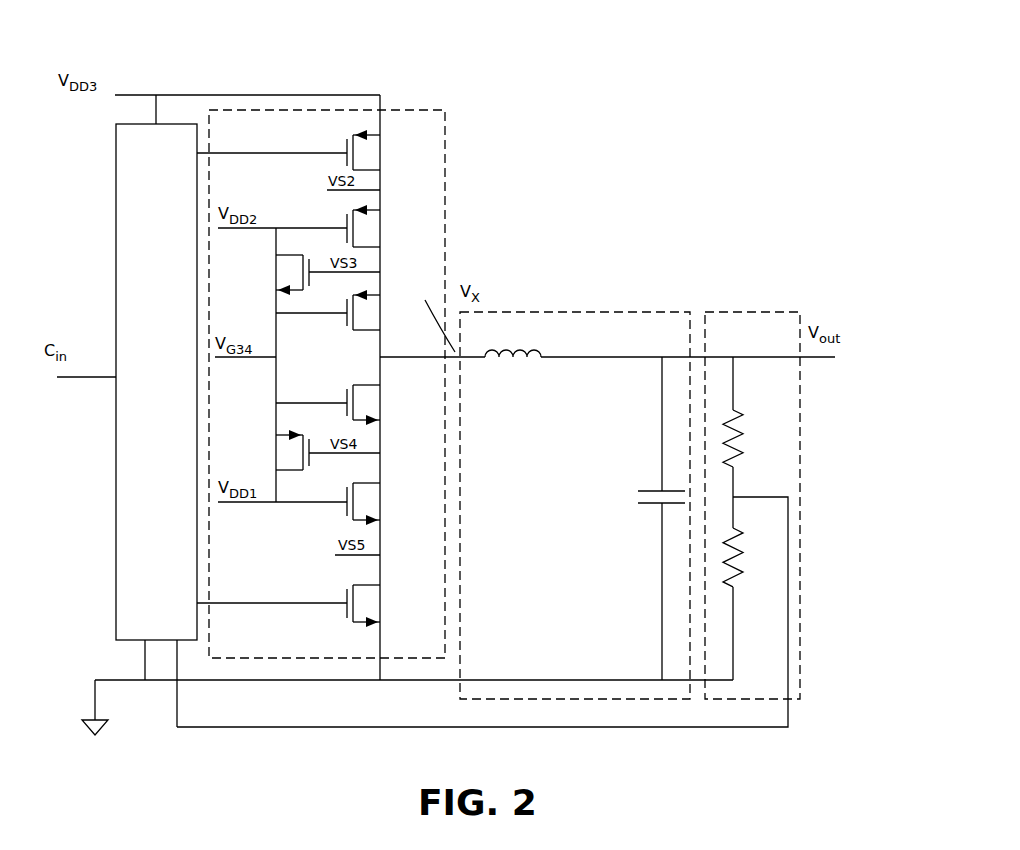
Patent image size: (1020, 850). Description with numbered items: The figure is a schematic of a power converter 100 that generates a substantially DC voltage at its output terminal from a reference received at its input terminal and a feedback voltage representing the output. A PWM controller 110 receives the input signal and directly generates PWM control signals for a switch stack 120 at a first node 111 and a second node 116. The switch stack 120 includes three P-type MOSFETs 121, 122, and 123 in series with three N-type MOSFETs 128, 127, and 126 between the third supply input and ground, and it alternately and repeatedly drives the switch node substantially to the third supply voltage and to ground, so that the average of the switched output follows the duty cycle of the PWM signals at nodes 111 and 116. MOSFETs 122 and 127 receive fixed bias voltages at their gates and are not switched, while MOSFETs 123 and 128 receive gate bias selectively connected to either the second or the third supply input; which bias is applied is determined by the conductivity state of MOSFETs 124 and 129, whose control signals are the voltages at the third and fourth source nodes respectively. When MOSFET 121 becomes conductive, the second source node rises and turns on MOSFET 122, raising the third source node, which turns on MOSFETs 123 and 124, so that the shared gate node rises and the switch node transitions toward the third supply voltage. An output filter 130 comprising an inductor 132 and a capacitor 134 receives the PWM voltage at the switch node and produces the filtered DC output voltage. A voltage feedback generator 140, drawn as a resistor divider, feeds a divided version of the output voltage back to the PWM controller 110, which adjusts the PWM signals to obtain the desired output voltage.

The converter 100 is at (634, 66).
The PWM controller 110 is at (116, 193).
The node 111 is at (222, 153).
The node 116 is at (210, 603).
The switch stack 120 is at (430, 110).
The P-type MOSFET 121 is at (368, 150).
The P-type MOSFET 122 is at (368, 225).
The P-type MOSFET 123 is at (368, 307).
The MOSFET 124 is at (288, 270).
The N-type MOSFET 126 is at (368, 597).
The N-type MOSFET 127 is at (368, 495).
The N-type MOSFET 128 is at (368, 398).
The MOSFET 129 is at (288, 453).
The output filter 130 is at (598, 312).
The inductor 132 is at (506, 363).
The capacitor 134 is at (646, 508).
The voltage feedback generator 140 is at (744, 312).